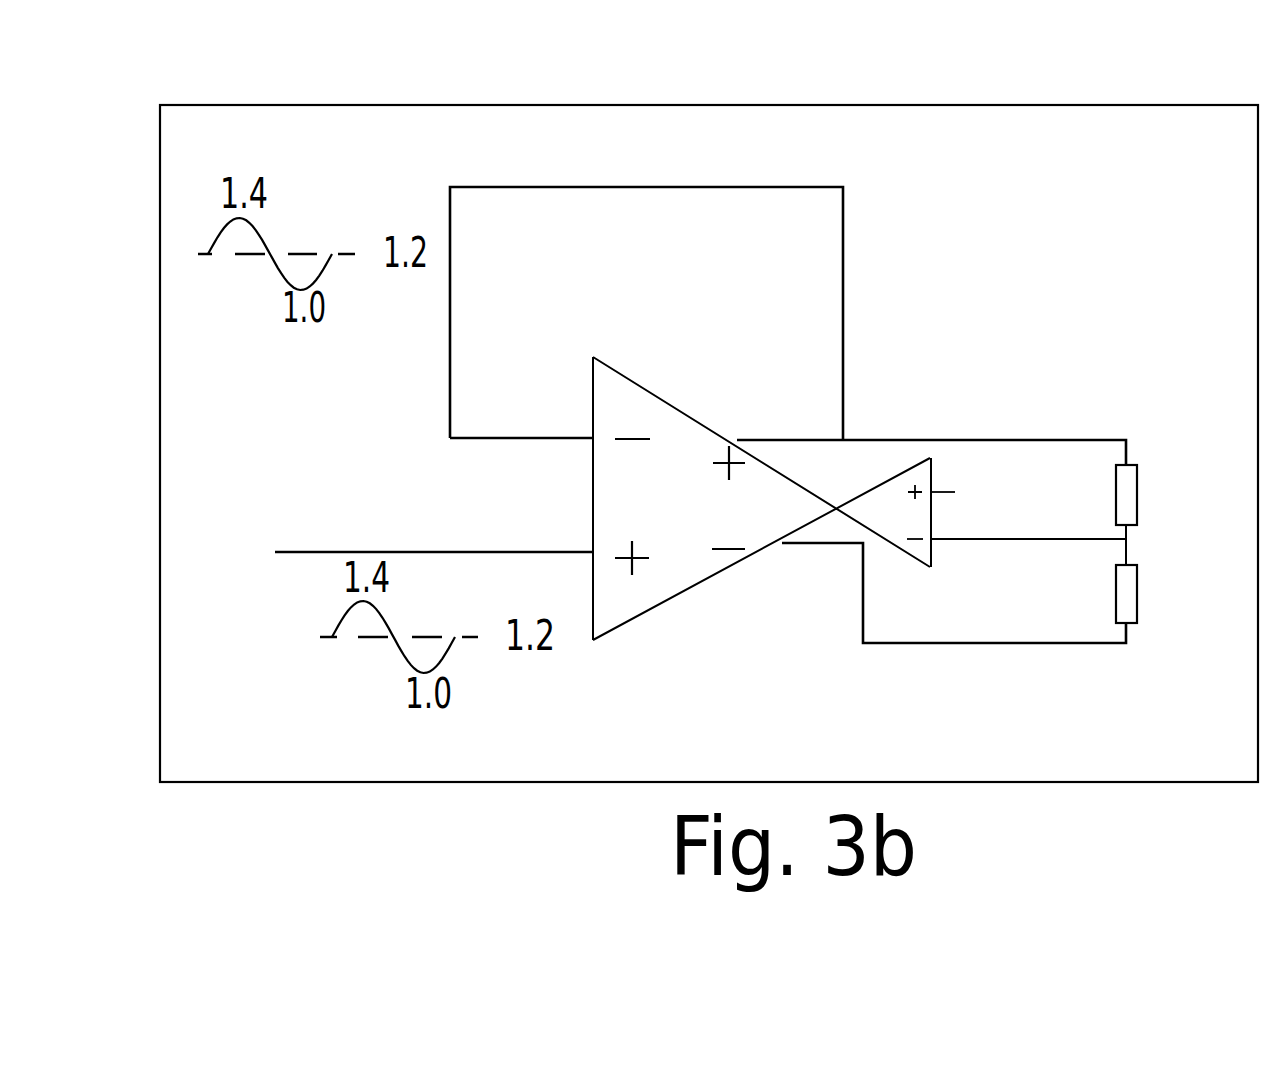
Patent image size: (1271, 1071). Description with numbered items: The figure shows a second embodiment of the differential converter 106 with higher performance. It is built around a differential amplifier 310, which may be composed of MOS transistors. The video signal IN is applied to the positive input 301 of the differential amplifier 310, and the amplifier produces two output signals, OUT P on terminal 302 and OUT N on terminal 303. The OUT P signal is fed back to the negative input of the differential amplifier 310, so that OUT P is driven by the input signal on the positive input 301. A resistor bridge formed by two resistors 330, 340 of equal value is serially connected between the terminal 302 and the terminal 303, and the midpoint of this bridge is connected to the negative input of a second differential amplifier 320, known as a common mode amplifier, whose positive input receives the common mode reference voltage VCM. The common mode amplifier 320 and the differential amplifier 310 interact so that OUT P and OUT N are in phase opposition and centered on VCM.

The differential converter 106 is at (1153, 107).
The positive input 301 is at (275, 555).
The terminal 302 is at (1032, 438).
The terminal 303 is at (975, 643).
The differential amplifier 310 is at (623, 380).
The second differential amplifier 320 is at (931, 567).
The resistor 330 is at (1137, 487).
The resistor 340 is at (1137, 590).